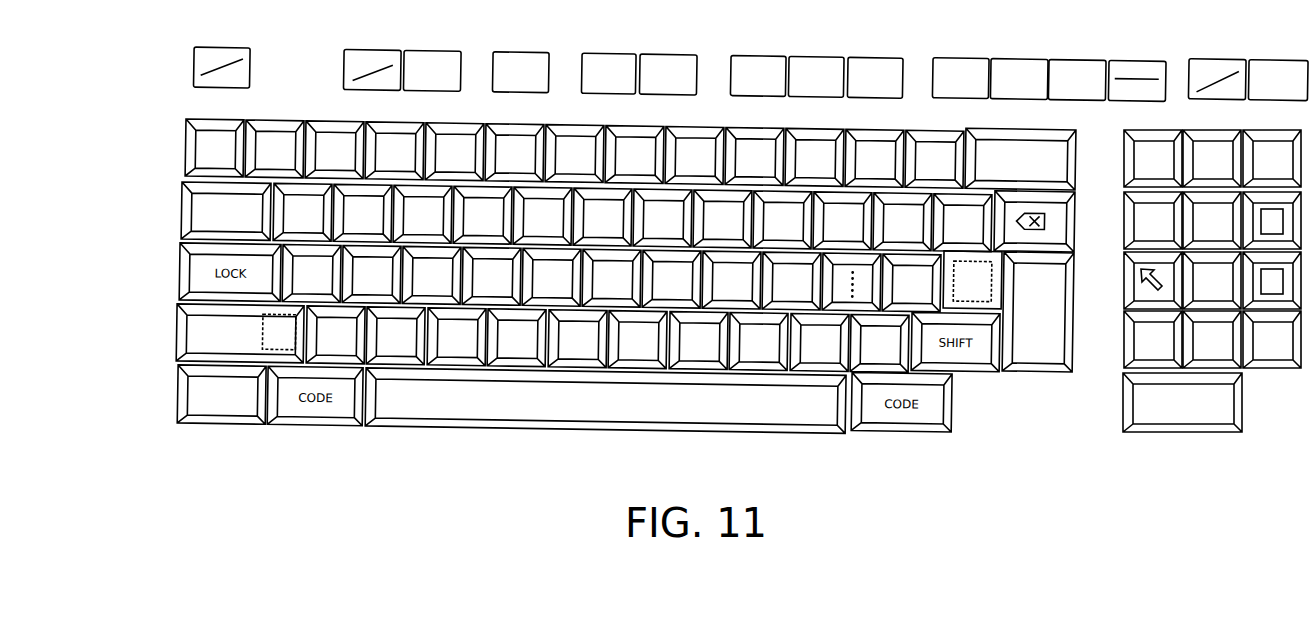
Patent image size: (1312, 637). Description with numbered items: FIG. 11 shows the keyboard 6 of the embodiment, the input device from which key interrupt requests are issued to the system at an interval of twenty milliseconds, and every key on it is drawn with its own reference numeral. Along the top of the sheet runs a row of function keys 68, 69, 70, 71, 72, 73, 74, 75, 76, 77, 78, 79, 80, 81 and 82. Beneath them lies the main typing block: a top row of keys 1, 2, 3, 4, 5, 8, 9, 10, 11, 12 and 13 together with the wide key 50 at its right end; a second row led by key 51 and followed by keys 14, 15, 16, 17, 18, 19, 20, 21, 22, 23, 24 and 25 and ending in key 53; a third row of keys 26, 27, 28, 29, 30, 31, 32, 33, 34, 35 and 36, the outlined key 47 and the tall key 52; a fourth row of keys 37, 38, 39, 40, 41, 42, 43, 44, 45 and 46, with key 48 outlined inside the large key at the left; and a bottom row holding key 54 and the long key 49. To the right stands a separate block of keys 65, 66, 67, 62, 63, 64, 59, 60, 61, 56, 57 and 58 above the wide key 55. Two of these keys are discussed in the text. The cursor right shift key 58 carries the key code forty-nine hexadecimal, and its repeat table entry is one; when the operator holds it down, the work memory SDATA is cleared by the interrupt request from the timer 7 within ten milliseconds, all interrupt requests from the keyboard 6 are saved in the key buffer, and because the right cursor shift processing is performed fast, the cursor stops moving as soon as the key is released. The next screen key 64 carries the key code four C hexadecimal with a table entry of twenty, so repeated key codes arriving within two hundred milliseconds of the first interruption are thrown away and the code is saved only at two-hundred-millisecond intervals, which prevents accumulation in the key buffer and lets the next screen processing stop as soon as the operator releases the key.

The key 1 is at (214, 148).
The key 2 (! 1) 2 is at (274, 149).
The key 3 (@ 2) 3 is at (334, 150).
The key 4 (# 3) 4 is at (394, 151).
The key 5 ($ 4) 5 is at (454, 152).
The keyboard 6 is at (514, 153).
The timer 7 is at (574, 154).
The key 8 (& 7) 8 is at (634, 155).
The key 9 (* 8) 9 is at (694, 156).
The key 10 (( 9) 10 is at (754, 156).
The key 11 () 0) 11 is at (814, 157).
The key 12 (dash) 12 is at (874, 158).
The key 13 (+ =) 13 is at (934, 159).
The Q key 14 is at (302, 212).
The W key 15 is at (362, 213).
The E key 16 is at (422, 214).
The R key 17 is at (482, 215).
The T key 18 is at (542, 216).
The Y key 19 is at (602, 217).
The U key 20 is at (662, 218).
The I key 21 is at (722, 219).
The O key 22 is at (782, 220).
The P key 23 is at (842, 221).
The fraction key 24 is at (902, 222).
The bracket key 25 is at (962, 223).
The A key 26 is at (311, 274).
The S key 27 is at (371, 274).
The D key 28 is at (431, 275).
The F key 29 is at (491, 276).
The G key 30 is at (551, 277).
The H key 31 is at (611, 278).
The J key 32 is at (671, 279).
The K key 33 is at (731, 280).
The L key 34 is at (791, 281).
The colon key 35 is at (851, 282).
The quote key 36 is at (911, 283).
The Z key 37 is at (335, 335).
The X key 38 is at (395, 336).
The C key 39 is at (456, 337).
The V key 40 is at (516, 338).
The B key 41 is at (577, 339).
The N key 42 is at (637, 340).
The M key 43 is at (698, 341).
The comma key 44 is at (758, 342).
The period key 45 is at (819, 343).
The question/slash key 46 is at (879, 343).
The Add 1 key 47 is at (972, 280).
The Add 2 key 48 is at (240, 333).
The space bar 49 is at (605, 401).
The back space key 50 is at (1020, 159).
The tab key 51 is at (226, 211).
The return key 52 is at (1038, 312).
The delete character key 53 is at (1034, 221).
The control key 54 is at (221, 394).
The execute key 55 is at (1182, 402).
The cursor left key 56 is at (1153, 339).
The cursor down key 57 is at (1212, 339).
The cursor right shift key 58 is at (1272, 339).
The cursor home key 59 is at (1153, 280).
The cursor up key 60 is at (1212, 280).
The page down key 61 is at (1272, 280).
The paragraph key 62 is at (1153, 220).
The star key 63 is at (1212, 220).
The next screen key 64 is at (1272, 220).
The word key 65 is at (1153, 158).
The insert key 66 is at (1212, 158).
The delete key 67 is at (1272, 158).
The start/end key 68 is at (222, 62).
The TW/WP key 69 is at (372, 64).
The help key 70 is at (432, 65).
The index key 71 is at (520, 67).
The copy key 72 is at (608, 68).
The move key 73 is at (668, 69).
The center key 74 is at (758, 71).
The indent key 75 is at (816, 71).
The decimal tab key 76 is at (875, 72).
The margin release key 77 is at (960, 73).
The left margin key 78 is at (1019, 74).
The right margin key 79 is at (1077, 75).
The tab set/clear key 80 is at (1137, 75).
The stop/continue key 81 is at (1217, 74).
The cancel key 82 is at (1278, 75).